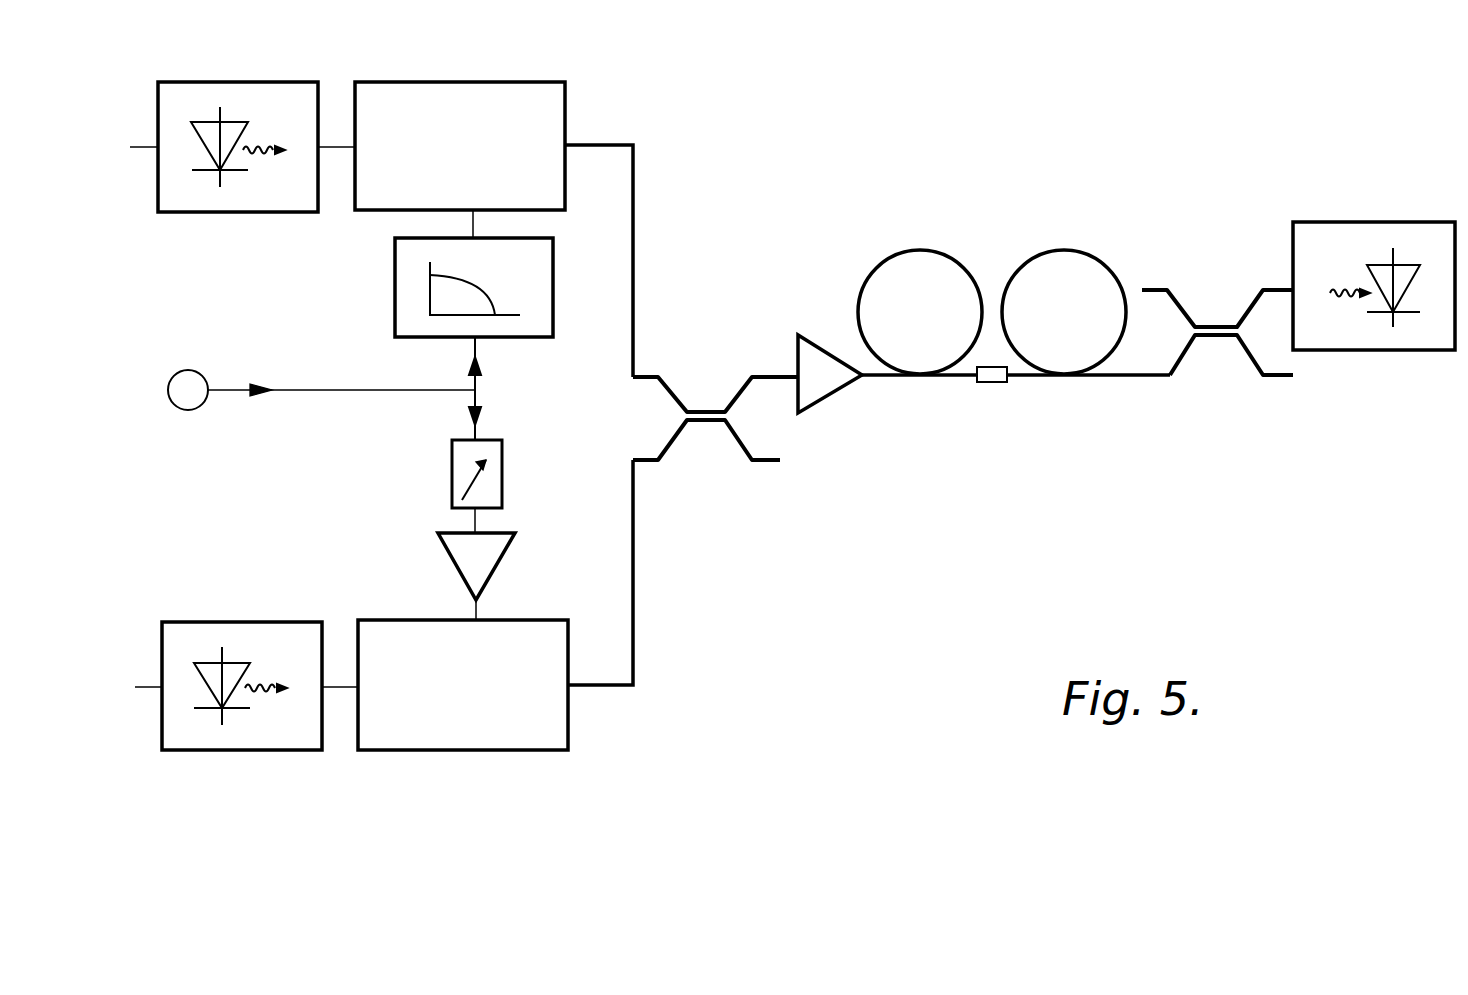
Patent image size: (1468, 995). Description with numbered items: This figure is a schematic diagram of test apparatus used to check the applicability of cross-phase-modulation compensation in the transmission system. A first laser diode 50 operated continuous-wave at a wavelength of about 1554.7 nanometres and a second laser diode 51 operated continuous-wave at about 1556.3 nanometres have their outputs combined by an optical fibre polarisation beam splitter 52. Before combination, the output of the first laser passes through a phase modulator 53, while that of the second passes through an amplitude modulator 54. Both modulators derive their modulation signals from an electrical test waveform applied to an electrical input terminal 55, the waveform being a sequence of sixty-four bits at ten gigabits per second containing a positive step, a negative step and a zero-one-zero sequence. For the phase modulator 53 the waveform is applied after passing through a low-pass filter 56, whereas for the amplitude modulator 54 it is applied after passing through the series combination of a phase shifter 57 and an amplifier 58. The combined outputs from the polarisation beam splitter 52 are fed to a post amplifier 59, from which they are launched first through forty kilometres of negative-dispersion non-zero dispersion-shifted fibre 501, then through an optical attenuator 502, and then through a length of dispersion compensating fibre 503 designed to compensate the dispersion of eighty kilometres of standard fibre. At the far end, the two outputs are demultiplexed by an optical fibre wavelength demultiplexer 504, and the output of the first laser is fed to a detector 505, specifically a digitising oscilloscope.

The first laser diode 50 is at (232, 193).
The second laser diode 51 is at (252, 645).
The optical fibre polarisation beam splitter 52 is at (698, 432).
The phase modulator 53 is at (543, 117).
The amplitude modulator 54 is at (545, 723).
The electrical input terminal 55 is at (195, 382).
The low-pass filter 56 is at (537, 280).
The phase shifter 57 is at (457, 475).
The amplifier 58 is at (483, 558).
The post amplifier 59 is at (825, 375).
The non-zero dispersion-shifted fibre 501 is at (878, 262).
The optical attenuator 502 is at (993, 382).
The dispersion compensating fibre 503 is at (1054, 245).
The optical fibre wavelength demultiplexer 504 is at (1212, 347).
The detector 505 is at (1372, 235).